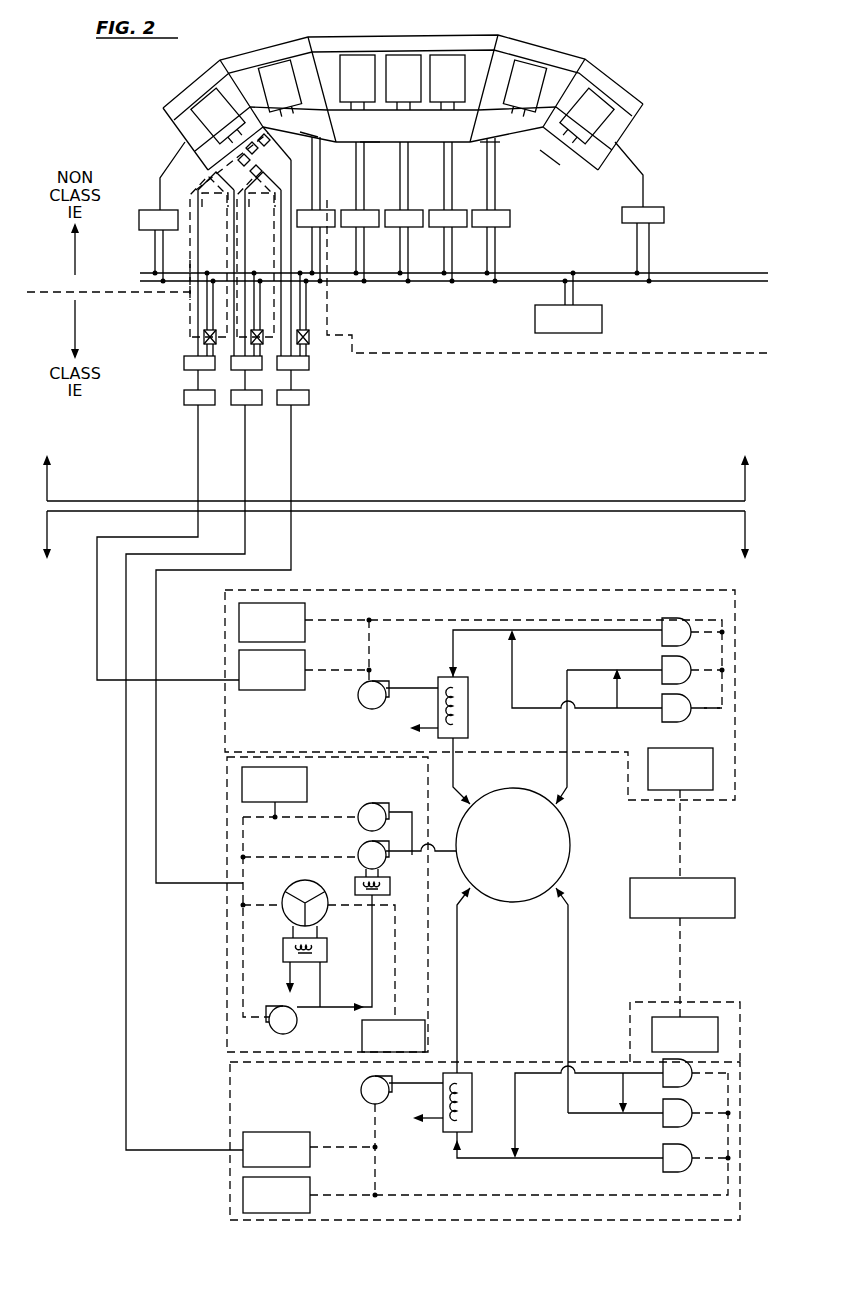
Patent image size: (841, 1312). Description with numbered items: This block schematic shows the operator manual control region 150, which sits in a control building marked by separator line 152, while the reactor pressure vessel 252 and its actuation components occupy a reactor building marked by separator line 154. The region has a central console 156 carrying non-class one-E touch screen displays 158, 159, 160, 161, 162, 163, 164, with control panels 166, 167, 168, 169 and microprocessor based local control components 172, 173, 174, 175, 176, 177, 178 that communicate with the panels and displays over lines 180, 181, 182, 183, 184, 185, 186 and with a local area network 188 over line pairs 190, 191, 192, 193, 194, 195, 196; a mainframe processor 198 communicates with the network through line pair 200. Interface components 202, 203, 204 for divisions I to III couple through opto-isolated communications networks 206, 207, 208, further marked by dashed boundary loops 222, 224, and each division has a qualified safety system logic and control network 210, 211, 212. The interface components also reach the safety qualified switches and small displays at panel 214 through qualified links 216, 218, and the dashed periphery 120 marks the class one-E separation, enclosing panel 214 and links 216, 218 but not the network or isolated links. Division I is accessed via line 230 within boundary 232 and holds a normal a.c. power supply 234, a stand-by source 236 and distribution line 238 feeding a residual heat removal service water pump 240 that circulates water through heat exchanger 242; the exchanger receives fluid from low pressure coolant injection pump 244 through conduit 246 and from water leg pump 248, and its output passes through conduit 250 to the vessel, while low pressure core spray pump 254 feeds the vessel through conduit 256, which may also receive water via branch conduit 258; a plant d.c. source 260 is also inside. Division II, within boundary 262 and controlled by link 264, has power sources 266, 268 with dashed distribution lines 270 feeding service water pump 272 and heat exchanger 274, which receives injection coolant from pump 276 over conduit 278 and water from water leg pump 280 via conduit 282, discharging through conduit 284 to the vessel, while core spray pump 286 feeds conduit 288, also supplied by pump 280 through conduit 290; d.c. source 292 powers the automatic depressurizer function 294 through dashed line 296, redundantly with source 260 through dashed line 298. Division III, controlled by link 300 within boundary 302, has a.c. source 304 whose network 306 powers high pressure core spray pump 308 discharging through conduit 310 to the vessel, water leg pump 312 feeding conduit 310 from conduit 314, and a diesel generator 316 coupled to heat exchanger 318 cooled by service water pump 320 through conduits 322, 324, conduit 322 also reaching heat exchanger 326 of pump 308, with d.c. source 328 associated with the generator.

The dashed periphery 120 is at (700, 353).
The operator manual control region 150 is at (682, 51).
The separator line 152 is at (640, 499).
The separator line 154 is at (636, 513).
The console 156 is at (615, 69).
The touch screen display 158 is at (215, 85).
The touch screen display 159 is at (279, 62).
The touch screen display 160 is at (350, 53).
The touch screen display 161 is at (405, 53).
The touch screen display 162 is at (455, 53).
The touch screen display 163 is at (535, 62).
The touch screen display 164 is at (605, 102).
The control panel 166 is at (310, 140).
The control panel 167 is at (368, 135).
The control panel 168 is at (497, 135).
The control panel 169 is at (553, 163).
The local control component 172 is at (157, 207).
The local control component 173 is at (318, 207).
The local control component 174 is at (361, 207).
The local control component 175 is at (404, 207).
The local control component 176 is at (447, 207).
The local control component 177 is at (500, 207).
The local control component 178 is at (665, 208).
The line 180 is at (190, 145).
The line 181 is at (321, 176).
The line 182 is at (361, 176).
The line 183 is at (402, 176).
The line 184 is at (445, 176).
The line 185 is at (495, 176).
The line 186 is at (632, 168).
The local area network 188 is at (766, 270).
The line pair 190 is at (151, 250).
The line pair 191 is at (348, 262).
The line pair 192 is at (392, 258).
The line pair 193 is at (432, 258).
The line pair 194 is at (482, 252).
The line pair 195 is at (548, 246).
The line pair 196 is at (654, 238).
The mainframe processor 198 is at (603, 315).
The line pair 200 is at (648, 292).
The interface component 202 is at (184, 363).
The interface component 203 is at (232, 370).
The interface component 204 is at (300, 371).
The opto-isolated communications network 206 is at (205, 308).
The opto-isolated communications network 207 is at (262, 296).
The opto-isolated communications network 208 is at (310, 315).
The safety system logic and control network 210 is at (188, 407).
The safety system logic and control network 211 is at (240, 408).
The safety system logic and control network 212 is at (300, 405).
The panel 214 is at (232, 170).
The qualified communications link 216 is at (193, 245).
The qualified communications link 218 is at (283, 247).
The dashed boundary loop 222 is at (213, 264).
The dashed boundary loop 224 is at (259, 264).
The line 230 is at (96, 612).
The boundary 232 is at (448, 592).
The normal a.c. power supply 234 is at (263, 691).
The stand-by a.c. power source 236 is at (306, 617).
The dashed line 238 is at (393, 622).
The pump 240 is at (370, 710).
The residual heat removal heat exchanger 242 is at (469, 721).
The low pressure coolant injection mode pump 244 is at (662, 640).
The conduit line 246 is at (550, 632).
The water leg pump 248 is at (662, 718).
The conduit 250 is at (455, 770).
The reactor pressure vessel 252 is at (571, 848).
The low pressure core spray pump 254 is at (666, 682).
The conduit 256 is at (568, 775).
The branch conduit 258 is at (617, 690).
The plant d.c. power source 260 is at (665, 800).
The boundary 262 is at (230, 1110).
The communications link 264 is at (128, 997).
The normal a.c. power source 266 is at (283, 1132).
The stand-by a.c. power source 268 is at (310, 1178).
The dashed lines 270 is at (377, 1170).
The residual heat removal service water pump 272 is at (362, 1088).
The residual heat removal heat exchanger 274 is at (470, 1132).
The pump 276 is at (665, 1166).
The piping 278 is at (540, 1160).
The water leg pump 280 is at (675, 1087).
The conduit 282 is at (517, 1130).
The conduit 284 is at (460, 993).
The low pressure core spray pump 286 is at (665, 1126).
The conduit 288 is at (572, 953).
The conduit line 290 is at (621, 1092).
The d.c. power source 292 is at (673, 1015).
The automatic depressurizer function 294 is at (700, 878).
The dashed line 296 is at (683, 952).
The dashed line 298 is at (683, 850).
The communications link 300 is at (195, 886).
The boundary 302 is at (227, 953).
The normal a.c. power source 304 is at (308, 783).
The dashed lines 306 is at (244, 835).
The high pressure core spray pump 308 is at (358, 850).
The conduit 310 is at (438, 856).
The water leg pump 312 is at (358, 808).
The conduit 314 is at (413, 800).
The high pressure core spray diesel generator 316 is at (292, 888).
The heat exchanger 318 is at (326, 938).
The service water pump 320 is at (283, 1034).
The conduit 322 is at (327, 1006).
The conduit 324 is at (321, 972).
The heat exchanger 326 is at (357, 878).
The d.c. power source 328 is at (362, 1036).